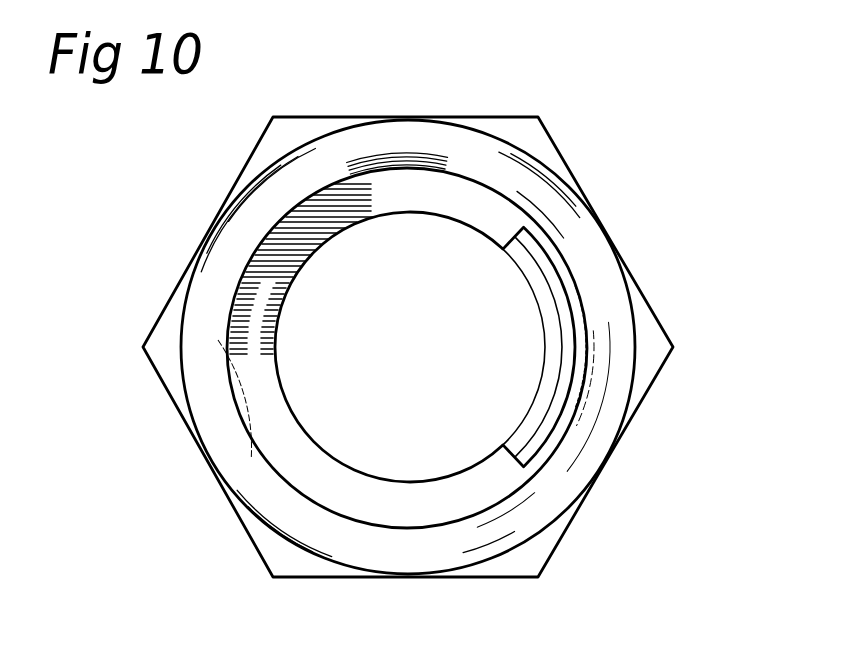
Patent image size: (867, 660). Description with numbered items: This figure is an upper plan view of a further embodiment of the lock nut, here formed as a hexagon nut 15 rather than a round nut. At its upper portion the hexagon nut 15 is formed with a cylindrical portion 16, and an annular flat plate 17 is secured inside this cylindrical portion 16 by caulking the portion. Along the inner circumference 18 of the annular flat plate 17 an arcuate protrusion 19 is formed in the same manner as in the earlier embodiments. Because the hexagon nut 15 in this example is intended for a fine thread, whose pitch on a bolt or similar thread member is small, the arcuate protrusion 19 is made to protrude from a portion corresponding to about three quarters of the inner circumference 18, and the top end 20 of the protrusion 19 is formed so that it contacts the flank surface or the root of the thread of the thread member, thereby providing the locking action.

The hexagon nut 15 is at (642, 217).
The cylindrical portion 16 is at (502, 173).
The annular flat plate 17 is at (497, 207).
The inner circumference 18 is at (562, 277).
The arcuate protrusion 19 is at (435, 205).
The top end 20 is at (280, 380).